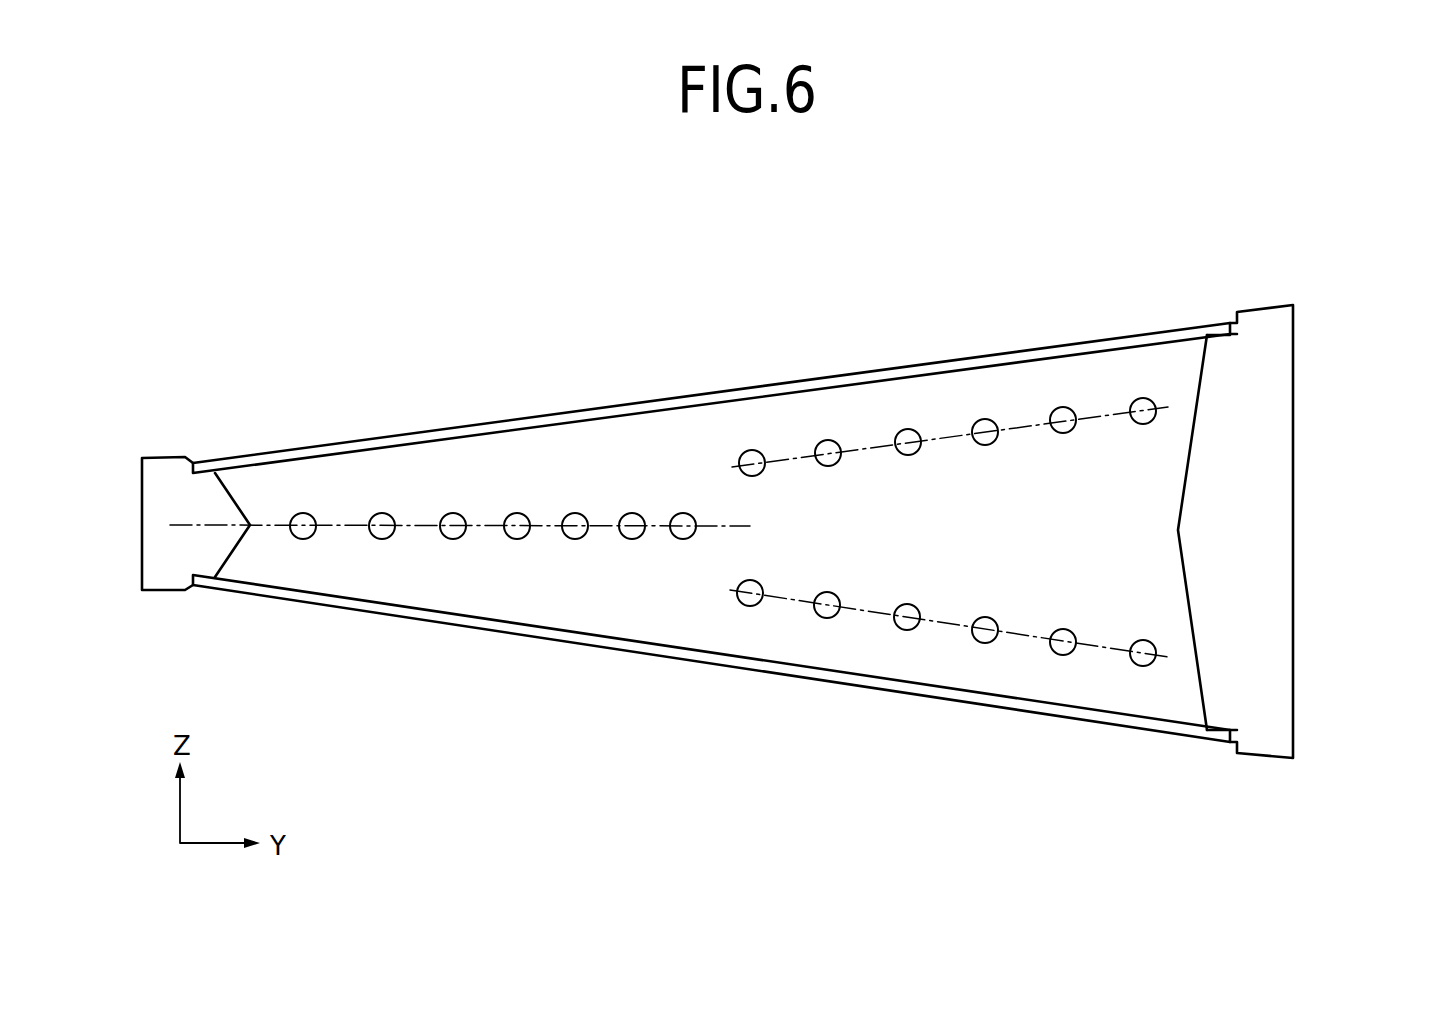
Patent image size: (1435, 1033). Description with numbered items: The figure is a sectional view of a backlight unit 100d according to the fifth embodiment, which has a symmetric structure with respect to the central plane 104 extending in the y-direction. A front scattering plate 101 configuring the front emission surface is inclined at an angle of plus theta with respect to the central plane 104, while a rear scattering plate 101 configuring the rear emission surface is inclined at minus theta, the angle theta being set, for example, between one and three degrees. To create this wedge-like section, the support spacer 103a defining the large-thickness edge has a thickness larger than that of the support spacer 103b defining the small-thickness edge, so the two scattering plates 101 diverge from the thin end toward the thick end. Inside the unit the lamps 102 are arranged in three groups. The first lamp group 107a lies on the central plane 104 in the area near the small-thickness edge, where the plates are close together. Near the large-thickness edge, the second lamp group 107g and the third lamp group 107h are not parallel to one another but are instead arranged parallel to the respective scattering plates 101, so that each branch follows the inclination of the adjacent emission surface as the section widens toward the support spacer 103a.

The backlight unit 100d is at (1287, 187).
The scattering plate 101 is at (364, 438).
The hole (light emitting element position) 102 is at (684, 512).
The support spacer 103a is at (1293, 373).
The support spacer 103b is at (142, 503).
The central plane 104 is at (716, 512).
The first lamp group 107a is at (544, 470).
The second lamp group 107g is at (999, 468).
The third lamp group 107h is at (976, 588).